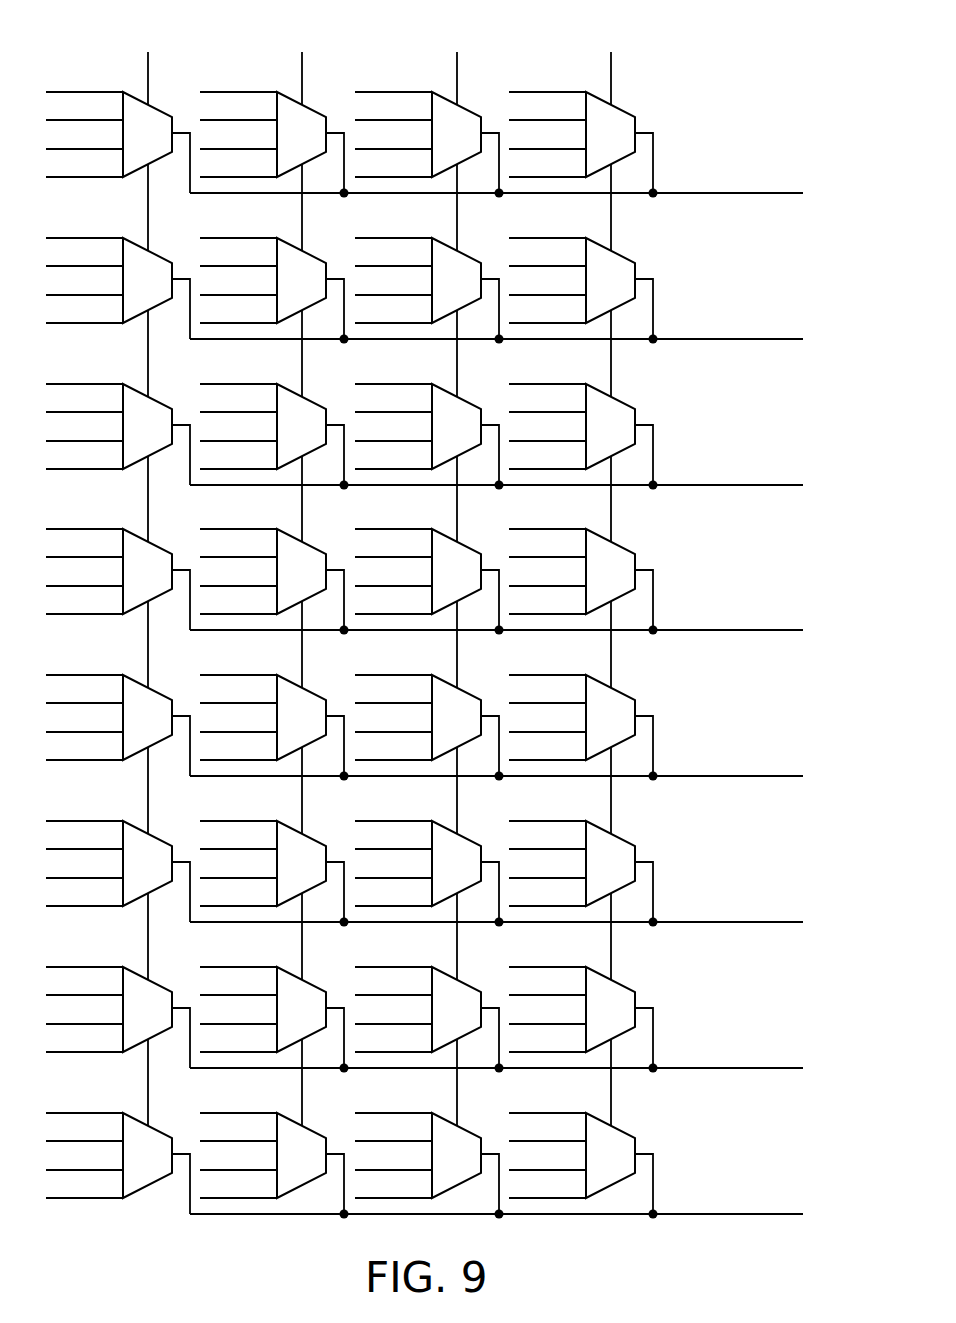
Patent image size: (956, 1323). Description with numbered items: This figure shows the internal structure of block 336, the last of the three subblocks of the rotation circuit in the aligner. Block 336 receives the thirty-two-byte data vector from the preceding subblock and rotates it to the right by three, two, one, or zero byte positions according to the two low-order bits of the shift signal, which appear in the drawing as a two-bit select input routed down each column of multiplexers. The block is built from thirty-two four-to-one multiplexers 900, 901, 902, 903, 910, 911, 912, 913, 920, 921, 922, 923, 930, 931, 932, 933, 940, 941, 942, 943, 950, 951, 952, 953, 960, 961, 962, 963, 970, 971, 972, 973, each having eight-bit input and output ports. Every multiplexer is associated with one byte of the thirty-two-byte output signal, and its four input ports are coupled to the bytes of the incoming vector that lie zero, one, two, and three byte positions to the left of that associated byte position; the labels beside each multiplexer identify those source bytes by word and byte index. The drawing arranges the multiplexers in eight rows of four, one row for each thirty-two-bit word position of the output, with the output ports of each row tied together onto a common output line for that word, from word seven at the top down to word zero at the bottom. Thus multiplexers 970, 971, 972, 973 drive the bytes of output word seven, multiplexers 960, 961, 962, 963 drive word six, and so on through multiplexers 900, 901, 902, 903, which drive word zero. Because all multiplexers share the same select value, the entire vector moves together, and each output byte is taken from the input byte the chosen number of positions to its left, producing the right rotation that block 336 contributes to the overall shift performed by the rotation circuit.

The block 336 is at (748, 58).
The 4:1 multiplexer 900 is at (585, 1146).
The 4:1 multiplexer 901 is at (431, 1146).
The 4:1 multiplexer 902 is at (276, 1146).
The 4:1 multiplexer 903 is at (122, 1146).
The 4:1 multiplexer 910 is at (585, 1000).
The 4:1 multiplexer 911 is at (431, 1000).
The 4:1 multiplexer 912 is at (276, 1000).
The 4:1 multiplexer 913 is at (122, 1000).
The 4:1 multiplexer 920 is at (585, 854).
The 4:1 multiplexer 921 is at (431, 854).
The 4:1 multiplexer 922 is at (276, 854).
The 4:1 multiplexer 923 is at (122, 854).
The 4:1 multiplexer 930 is at (585, 708).
The 4:1 multiplexer 931 is at (431, 708).
The 4:1 multiplexer 932 is at (276, 708).
The 4:1 multiplexer 933 is at (122, 708).
The 4:1 multiplexer 940 is at (585, 562).
The 4:1 multiplexer 941 is at (431, 562).
The 4:1 multiplexer 942 is at (276, 562).
The 4:1 multiplexer 943 is at (122, 562).
The 4:1 multiplexer 950 is at (585, 417).
The 4:1 multiplexer 951 is at (431, 417).
The 4:1 multiplexer 952 is at (276, 417).
The 4:1 multiplexer 953 is at (122, 417).
The 4:1 multiplexer 960 is at (585, 271).
The 4:1 multiplexer 961 is at (431, 271).
The 4:1 multiplexer 962 is at (276, 271).
The 4:1 multiplexer 963 is at (122, 271).
The 4:1 multiplexer 970 is at (585, 125).
The 4:1 multiplexer 971 is at (431, 125).
The 4:1 multiplexer 972 is at (276, 125).
The 4:1 multiplexer 973 is at (122, 125).